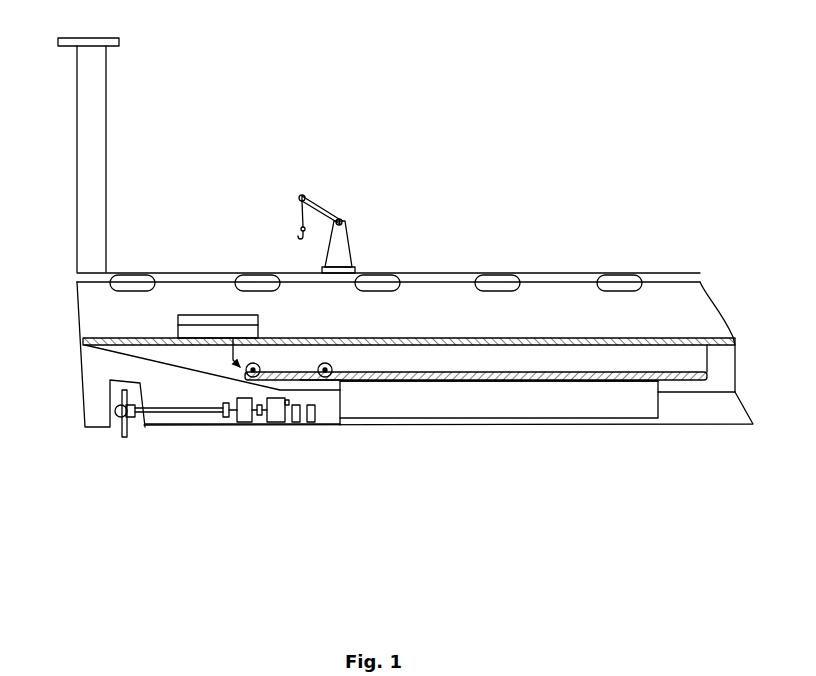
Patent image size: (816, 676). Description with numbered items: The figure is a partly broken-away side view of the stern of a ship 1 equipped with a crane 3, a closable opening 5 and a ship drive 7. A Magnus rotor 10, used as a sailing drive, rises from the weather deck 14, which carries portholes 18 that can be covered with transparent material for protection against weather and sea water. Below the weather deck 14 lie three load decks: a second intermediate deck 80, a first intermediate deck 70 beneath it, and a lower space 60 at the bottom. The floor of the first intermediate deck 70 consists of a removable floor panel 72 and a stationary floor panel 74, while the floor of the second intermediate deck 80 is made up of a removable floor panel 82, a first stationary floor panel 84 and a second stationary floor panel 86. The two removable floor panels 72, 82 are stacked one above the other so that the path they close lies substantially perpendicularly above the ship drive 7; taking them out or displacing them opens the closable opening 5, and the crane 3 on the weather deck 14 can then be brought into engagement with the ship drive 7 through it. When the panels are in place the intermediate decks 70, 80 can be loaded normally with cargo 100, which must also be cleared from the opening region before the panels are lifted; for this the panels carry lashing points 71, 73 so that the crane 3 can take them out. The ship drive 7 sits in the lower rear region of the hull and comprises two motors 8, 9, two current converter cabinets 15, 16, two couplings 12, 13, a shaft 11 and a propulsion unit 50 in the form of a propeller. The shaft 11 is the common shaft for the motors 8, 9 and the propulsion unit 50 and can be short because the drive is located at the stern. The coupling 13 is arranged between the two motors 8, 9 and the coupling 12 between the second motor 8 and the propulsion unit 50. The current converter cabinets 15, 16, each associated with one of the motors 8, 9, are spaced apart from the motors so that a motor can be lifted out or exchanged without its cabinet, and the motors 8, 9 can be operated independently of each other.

The ship 1 is at (654, 78).
The crane 3 is at (319, 188).
The closable opening 5 is at (273, 236).
The ship drive 7 is at (352, 453).
The second motor 8 is at (242, 428).
The motor 9 is at (273, 428).
The Magnus rotor 10 is at (88, 155).
The shaft 11 is at (150, 428).
The coupling 12 is at (225, 428).
The coupling 13 is at (257, 428).
The weather deck 14 is at (422, 273).
The current converter cabinet 15 is at (298, 428).
The current converter cabinet 16 is at (315, 428).
The porthole 18 is at (502, 279).
The propulsion unit 50 is at (118, 433).
The lower space 60 is at (499, 403).
The first intermediate deck 70 is at (668, 358).
The lashing point 71 is at (338, 365).
The removable floor panel 72 is at (316, 384).
The lashing point 73 is at (238, 366).
The stationary floor panel 74 is at (528, 389).
The second intermediate deck 80 is at (415, 354).
The removable floor panel 82 is at (331, 337).
The first stationary floor panel 84 is at (414, 337).
The second stationary floor panel 86 is at (164, 354).
The cargo 100 is at (196, 311).